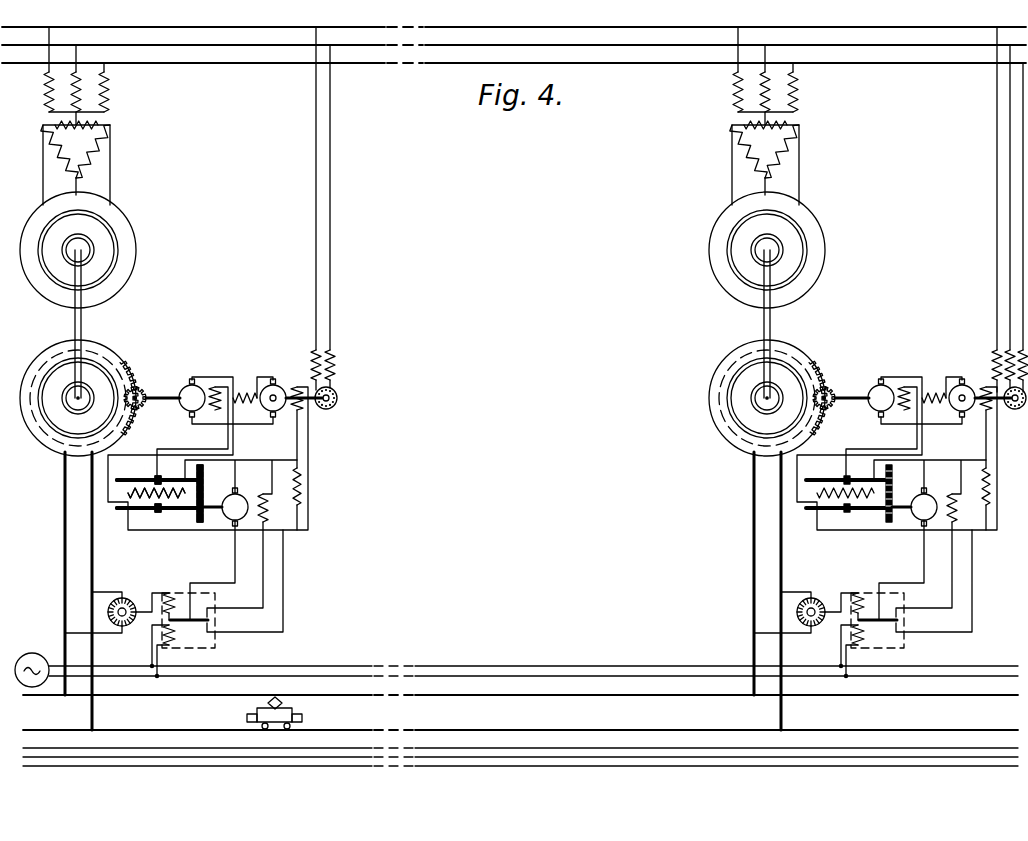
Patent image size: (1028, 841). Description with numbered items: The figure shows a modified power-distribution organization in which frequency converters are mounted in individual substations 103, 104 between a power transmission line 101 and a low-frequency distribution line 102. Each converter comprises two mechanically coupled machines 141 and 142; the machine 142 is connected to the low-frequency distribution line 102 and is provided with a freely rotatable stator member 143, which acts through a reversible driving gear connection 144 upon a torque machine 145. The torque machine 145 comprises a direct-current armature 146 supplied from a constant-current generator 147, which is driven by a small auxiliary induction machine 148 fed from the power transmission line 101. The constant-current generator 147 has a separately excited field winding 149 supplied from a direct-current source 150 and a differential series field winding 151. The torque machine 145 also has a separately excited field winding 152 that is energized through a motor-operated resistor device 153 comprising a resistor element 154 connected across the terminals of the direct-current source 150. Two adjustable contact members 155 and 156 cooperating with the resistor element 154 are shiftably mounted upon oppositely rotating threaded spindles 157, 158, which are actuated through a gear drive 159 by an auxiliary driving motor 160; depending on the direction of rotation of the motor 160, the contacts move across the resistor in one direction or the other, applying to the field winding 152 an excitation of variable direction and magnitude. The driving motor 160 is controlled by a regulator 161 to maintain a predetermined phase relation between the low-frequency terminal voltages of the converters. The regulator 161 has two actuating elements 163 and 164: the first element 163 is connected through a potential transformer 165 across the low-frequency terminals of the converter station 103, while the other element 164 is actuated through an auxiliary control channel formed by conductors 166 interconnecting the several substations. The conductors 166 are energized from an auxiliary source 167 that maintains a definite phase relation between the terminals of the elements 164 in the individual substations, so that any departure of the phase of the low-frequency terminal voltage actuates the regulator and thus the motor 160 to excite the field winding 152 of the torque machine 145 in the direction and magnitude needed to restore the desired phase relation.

The power transmission line 101 is at (240, 55).
The low-frequency distribution line 102 is at (366, 696).
The substation 103 is at (46, 325).
The substation 104 is at (828, 325).
The machine 141 is at (176, 253).
The machine 142 is at (157, 363).
The freely rotatable stator member 143 is at (128, 388).
The reversible driving gear connection 144 is at (136, 409).
The torque machine 145 is at (226, 377).
The direct-current armature 146 is at (186, 398).
The constant-current generator 147 is at (273, 386).
The auxiliary induction machine 148 is at (335, 394).
The separately excited field winding 149 is at (292, 411).
The direct-current source 150 is at (310, 488).
The differential series field winding 151 is at (237, 392).
The separately excited field winding 152 is at (212, 414).
The motor-operated resistor device 153 is at (147, 477).
The resistor element 154 is at (128, 493).
The adjustable contact member 155 is at (158, 476).
The adjustable contact member 156 is at (160, 512).
The threaded spindle 157 is at (118, 480).
The threaded spindle 158 is at (122, 510).
The gear drive 159 is at (203, 492).
The auxiliary driving motor 160 is at (240, 494).
The regulator 161 is at (216, 606).
The actuating element 163 is at (171, 593).
The actuating element 164 is at (170, 645).
The potential transformer 165 is at (102, 600).
The conductors 166 is at (433, 666).
The auxiliary source 167 is at (42, 655).